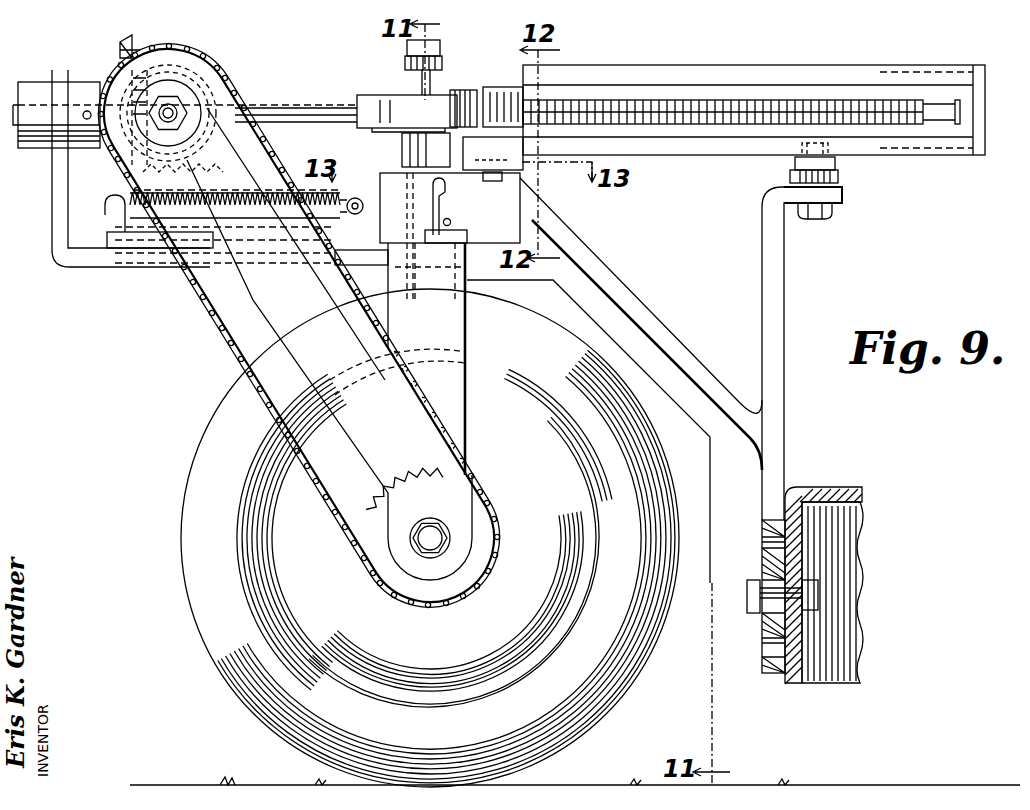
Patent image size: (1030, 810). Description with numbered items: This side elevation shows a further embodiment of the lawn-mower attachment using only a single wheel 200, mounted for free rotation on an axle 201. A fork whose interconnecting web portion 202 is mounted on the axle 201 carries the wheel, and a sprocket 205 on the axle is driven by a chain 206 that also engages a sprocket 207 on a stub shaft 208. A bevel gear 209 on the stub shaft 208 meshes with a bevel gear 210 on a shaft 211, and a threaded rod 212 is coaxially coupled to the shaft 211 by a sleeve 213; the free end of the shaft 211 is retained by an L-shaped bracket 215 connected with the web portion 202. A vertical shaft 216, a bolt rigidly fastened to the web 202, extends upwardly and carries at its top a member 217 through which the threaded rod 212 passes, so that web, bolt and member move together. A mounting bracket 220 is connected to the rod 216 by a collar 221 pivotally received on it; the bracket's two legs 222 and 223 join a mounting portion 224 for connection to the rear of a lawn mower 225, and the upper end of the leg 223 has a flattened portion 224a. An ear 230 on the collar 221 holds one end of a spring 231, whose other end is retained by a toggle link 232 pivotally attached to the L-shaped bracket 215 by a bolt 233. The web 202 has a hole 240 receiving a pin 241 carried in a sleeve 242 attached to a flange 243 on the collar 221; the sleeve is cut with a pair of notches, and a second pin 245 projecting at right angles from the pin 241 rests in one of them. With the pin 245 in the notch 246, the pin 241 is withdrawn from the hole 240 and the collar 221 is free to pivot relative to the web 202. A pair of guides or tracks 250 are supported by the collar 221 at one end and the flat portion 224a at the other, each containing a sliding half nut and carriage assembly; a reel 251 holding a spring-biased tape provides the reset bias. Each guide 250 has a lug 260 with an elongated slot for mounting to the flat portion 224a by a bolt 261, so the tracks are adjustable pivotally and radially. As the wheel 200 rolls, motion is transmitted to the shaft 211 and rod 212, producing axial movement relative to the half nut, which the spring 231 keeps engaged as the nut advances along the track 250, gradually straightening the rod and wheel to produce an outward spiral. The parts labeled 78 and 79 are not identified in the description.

The wheel 200 is at (603, 710).
The axle 201 is at (445, 540).
The web portion 202 is at (383, 262).
The sprocket 205 is at (368, 490).
The chain 206 is at (222, 336).
The sprocket 207 is at (208, 72).
The stub shaft 208 is at (168, 107).
The bevel gear 209 is at (230, 88).
The bevel gear 210 is at (120, 48).
The shaft 211 is at (284, 108).
The threaded rod 212 is at (708, 100).
The sleeve 213 is at (372, 94).
The L-shaped bracket 215 is at (54, 200).
The vertical shaft 216 is at (414, 290).
The member 217 is at (403, 142).
The mounting bracket 220 is at (669, 316).
The collar 221 is at (515, 195).
The leg 222 is at (605, 258).
The leg 223 is at (760, 244).
The mounting portion 224 is at (772, 488).
The flattened portion 224a is at (843, 200).
The lawn mower 225 is at (843, 488).
The ear 230 is at (352, 198).
The spring 231 is at (328, 192).
The toggle link 232 is at (150, 250).
The bolt 233 is at (282, 222).
The hole 240 is at (470, 258).
The pin 241 is at (458, 236).
The sleeve 242 is at (451, 221).
The flange 243 is at (423, 238).
The second pin 245 is at (430, 220).
The notch 246 is at (446, 202).
The guides 250 is at (935, 68).
The reel 251 is at (440, 85).
The lug 260 is at (838, 178).
The bolt 261 is at (815, 220).
The bearing 78 is at (465, 90).
The bearing block 79 is at (497, 87).